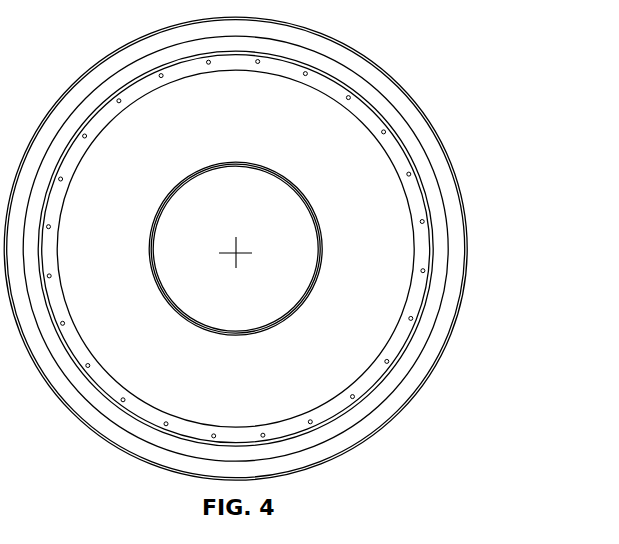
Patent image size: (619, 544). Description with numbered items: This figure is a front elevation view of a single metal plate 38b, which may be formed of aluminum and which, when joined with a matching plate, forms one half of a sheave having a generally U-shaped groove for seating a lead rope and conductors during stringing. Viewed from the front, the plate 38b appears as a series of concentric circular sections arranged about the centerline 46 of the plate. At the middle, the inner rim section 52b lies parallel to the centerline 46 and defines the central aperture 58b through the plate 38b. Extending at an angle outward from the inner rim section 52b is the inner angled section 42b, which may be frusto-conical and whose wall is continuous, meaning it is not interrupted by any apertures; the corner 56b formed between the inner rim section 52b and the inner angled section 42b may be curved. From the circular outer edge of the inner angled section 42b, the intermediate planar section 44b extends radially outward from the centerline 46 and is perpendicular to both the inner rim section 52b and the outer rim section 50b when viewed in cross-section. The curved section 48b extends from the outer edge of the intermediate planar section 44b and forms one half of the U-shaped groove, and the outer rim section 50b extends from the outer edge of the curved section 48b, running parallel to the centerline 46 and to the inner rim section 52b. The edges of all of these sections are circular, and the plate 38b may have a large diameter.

The metal plate 38b is at (458, 82).
The inner angled section 42b is at (320, 355).
The intermediate planar section 44b is at (398, 340).
The centerline 46 is at (236, 253).
The curved section 48b is at (452, 290).
The outer rim section 50b is at (465, 235).
The inner rim section 52b is at (310, 208).
The corner 56b is at (310, 294).
The central aperture 58b is at (236, 200).